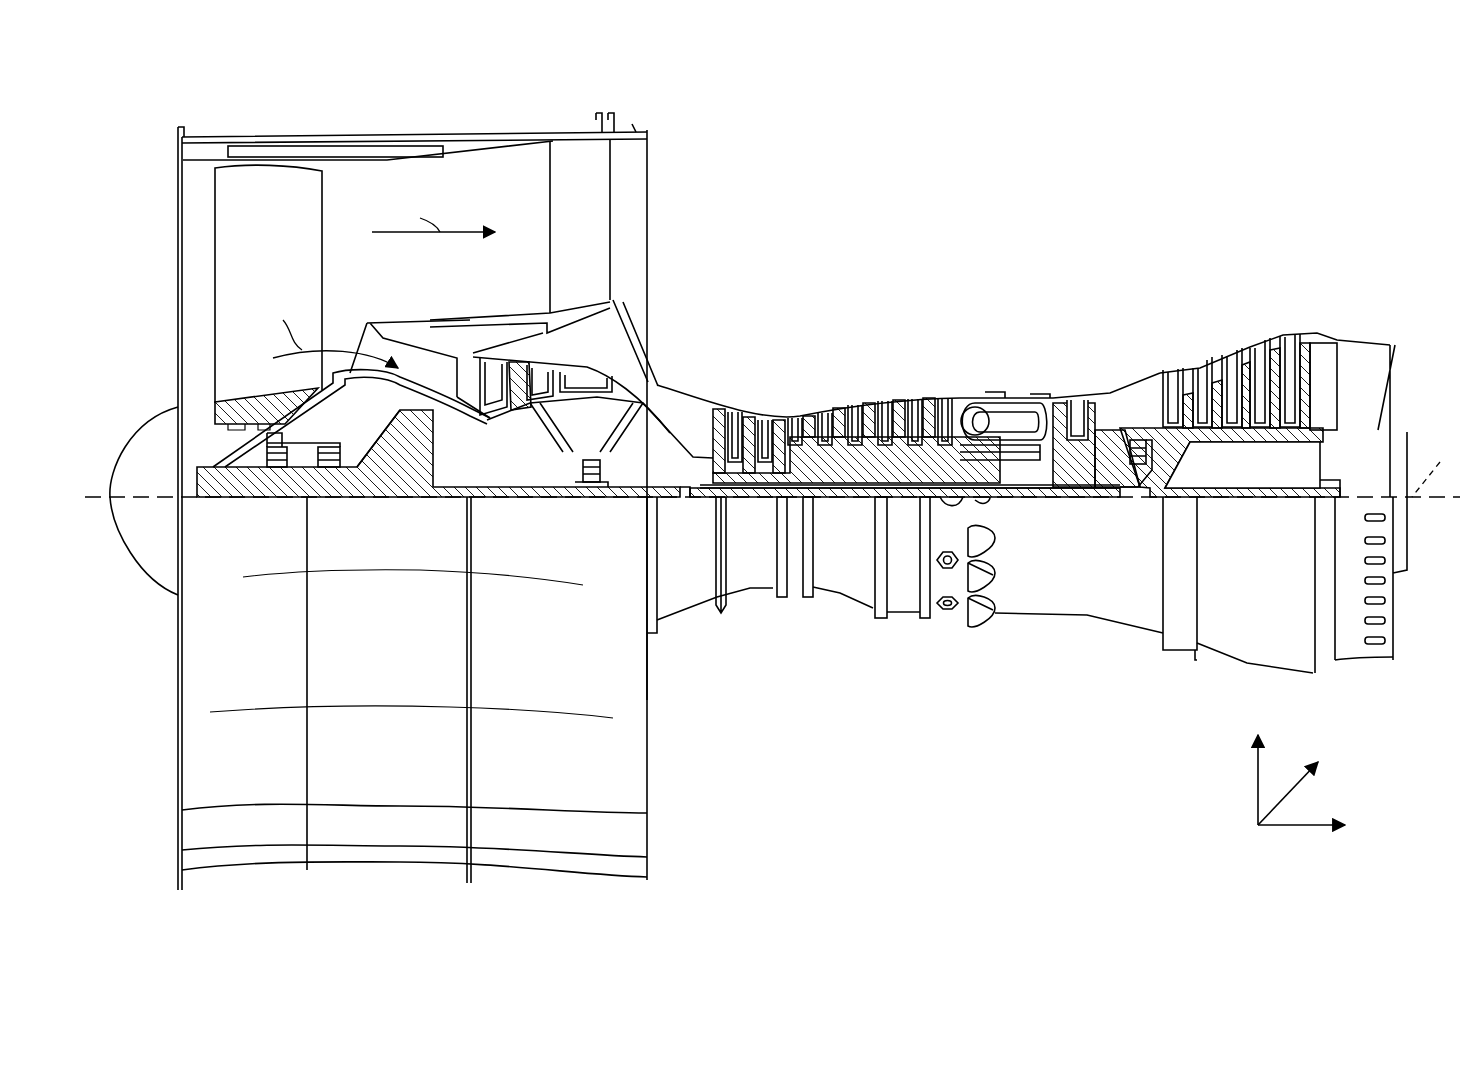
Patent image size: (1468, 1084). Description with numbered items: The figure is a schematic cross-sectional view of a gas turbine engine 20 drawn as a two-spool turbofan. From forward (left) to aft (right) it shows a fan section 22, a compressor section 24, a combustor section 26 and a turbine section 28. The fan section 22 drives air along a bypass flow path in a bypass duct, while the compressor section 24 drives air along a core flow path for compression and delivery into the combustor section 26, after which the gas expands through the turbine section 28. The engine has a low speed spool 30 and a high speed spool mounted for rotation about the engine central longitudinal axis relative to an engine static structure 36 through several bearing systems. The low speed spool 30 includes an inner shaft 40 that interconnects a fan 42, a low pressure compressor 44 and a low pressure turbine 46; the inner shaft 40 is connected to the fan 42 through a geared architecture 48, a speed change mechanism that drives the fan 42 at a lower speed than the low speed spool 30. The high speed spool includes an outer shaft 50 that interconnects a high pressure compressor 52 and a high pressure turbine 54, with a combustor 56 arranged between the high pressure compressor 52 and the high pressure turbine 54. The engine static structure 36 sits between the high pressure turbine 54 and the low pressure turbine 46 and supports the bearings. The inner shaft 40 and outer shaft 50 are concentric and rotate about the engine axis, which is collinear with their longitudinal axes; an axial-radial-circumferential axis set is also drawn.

The gas turbine engine 20 is at (1283, 102).
The fan section 22 is at (272, 132).
The compressor section 24 is at (790, 326).
The combustor section 26 is at (980, 312).
The turbine section 28 is at (1155, 297).
The low speed spool 30 is at (866, 501).
The engine static structure 36 is at (905, 620).
The inner shaft 40 is at (683, 499).
The fan 42 is at (278, 236).
The low pressure compressor 44 is at (570, 385).
The low pressure turbine 46 is at (1242, 357).
The geared architecture 48 is at (412, 468).
The outer shaft 50 is at (1044, 497).
The high pressure compressor 52 is at (825, 460).
The high pressure turbine 54 is at (1082, 410).
The combustor 56 is at (1002, 424).